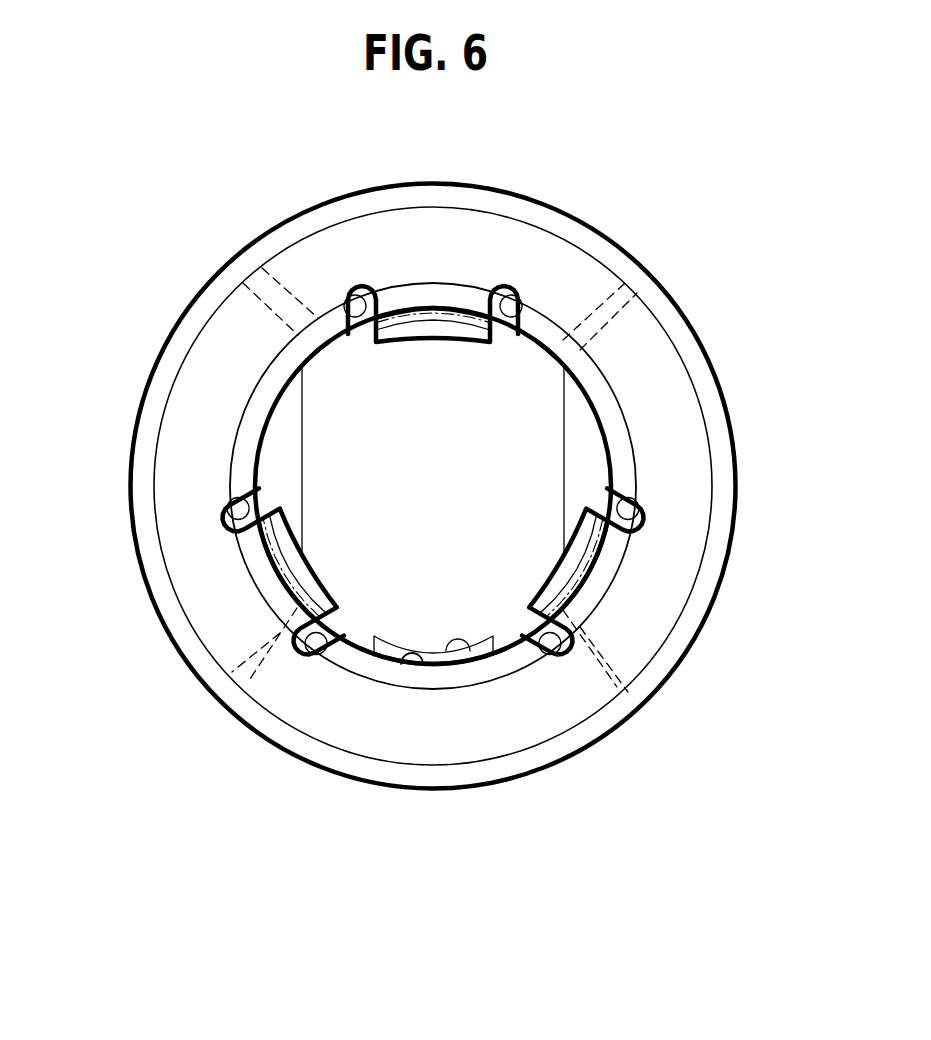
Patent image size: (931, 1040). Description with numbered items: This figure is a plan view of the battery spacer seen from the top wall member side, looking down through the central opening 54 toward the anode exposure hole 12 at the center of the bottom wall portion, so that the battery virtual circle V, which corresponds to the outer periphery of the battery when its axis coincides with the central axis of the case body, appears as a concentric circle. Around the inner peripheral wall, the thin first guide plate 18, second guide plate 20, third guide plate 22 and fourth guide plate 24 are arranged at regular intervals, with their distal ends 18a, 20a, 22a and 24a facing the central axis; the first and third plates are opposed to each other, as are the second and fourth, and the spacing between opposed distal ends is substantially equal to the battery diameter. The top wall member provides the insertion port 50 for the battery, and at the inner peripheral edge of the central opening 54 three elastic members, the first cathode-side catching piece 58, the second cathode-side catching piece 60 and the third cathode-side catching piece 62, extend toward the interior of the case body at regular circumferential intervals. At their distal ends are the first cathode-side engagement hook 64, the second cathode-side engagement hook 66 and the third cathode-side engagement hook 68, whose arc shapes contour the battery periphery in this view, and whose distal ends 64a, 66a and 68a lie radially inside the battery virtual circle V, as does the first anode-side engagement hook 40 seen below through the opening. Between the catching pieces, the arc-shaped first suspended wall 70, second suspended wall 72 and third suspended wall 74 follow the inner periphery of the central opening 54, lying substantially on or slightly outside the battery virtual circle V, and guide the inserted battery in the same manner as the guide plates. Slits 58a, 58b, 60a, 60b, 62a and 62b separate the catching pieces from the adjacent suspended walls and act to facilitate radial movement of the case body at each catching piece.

The anode exposure hole 12 is at (303, 440).
The first guide plate 18 is at (228, 650).
The distal end of the first guide plate 18a is at (326, 603).
The second guide plate 20 is at (263, 292).
The distal end of the second guide plate 20a is at (308, 361).
The third guide plate 22 is at (624, 320).
The distal end of the third guide plate 22a is at (560, 353).
The fourth guide plate 24 is at (622, 672).
The distal end of the fourth guide plate 24a is at (549, 592).
The first anode-side engagement hook 40 is at (470, 652).
The insertion port 50 is at (406, 658).
The central opening 54 is at (412, 658).
The first cathode-side catching piece 58 is at (432, 284).
The slit 58a is at (531, 298).
The slit 58b is at (346, 292).
The second cathode-side catching piece 60 is at (590, 580).
The slit 60a is at (548, 664).
The slit 60b is at (640, 492).
The third cathode-side catching piece 62 is at (292, 588).
The slit 62a is at (236, 492).
The slit 62b is at (305, 660).
The first cathode-side engagement hook 64 is at (406, 322).
The distal end of the first cathode-side engagement hook 64a is at (460, 326).
The second cathode-side engagement hook 66 is at (553, 561).
The distal end of the second cathode-side engagement hook 66a is at (572, 521).
The third cathode-side engagement hook 68 is at (318, 581).
The distal end of the third cathode-side engagement hook 68a is at (296, 556).
The first suspended wall 70 is at (613, 398).
The second suspended wall 72 is at (513, 667).
The third suspended wall 74 is at (268, 378).
The battery virtual circle V is at (610, 458).